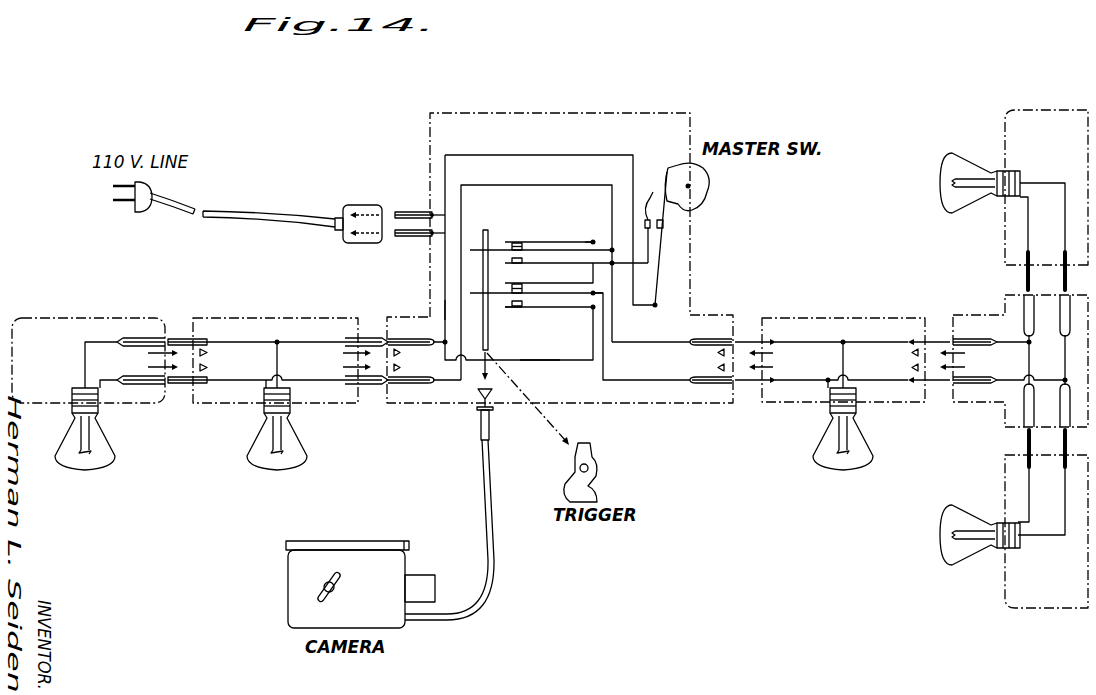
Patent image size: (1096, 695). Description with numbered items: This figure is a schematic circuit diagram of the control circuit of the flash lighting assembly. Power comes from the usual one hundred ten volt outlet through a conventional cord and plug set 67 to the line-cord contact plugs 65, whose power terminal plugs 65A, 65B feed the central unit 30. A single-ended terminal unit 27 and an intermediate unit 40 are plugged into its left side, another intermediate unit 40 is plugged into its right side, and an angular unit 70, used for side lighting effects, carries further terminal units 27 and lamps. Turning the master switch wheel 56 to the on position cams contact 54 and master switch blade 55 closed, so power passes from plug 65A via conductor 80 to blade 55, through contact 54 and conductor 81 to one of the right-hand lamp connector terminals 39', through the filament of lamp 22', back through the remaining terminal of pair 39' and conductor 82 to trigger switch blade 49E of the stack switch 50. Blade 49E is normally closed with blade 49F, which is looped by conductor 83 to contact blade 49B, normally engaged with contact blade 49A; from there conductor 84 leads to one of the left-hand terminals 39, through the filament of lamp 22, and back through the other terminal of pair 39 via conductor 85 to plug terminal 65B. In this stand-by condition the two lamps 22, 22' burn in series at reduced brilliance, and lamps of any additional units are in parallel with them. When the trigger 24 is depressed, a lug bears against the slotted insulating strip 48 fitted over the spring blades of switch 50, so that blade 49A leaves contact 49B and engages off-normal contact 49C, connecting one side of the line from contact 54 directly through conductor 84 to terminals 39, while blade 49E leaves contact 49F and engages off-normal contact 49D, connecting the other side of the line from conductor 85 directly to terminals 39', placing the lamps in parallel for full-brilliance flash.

The lamp 22 is at (296, 432).
The lamp 22' is at (868, 431).
The trigger 24 is at (597, 481).
The single-ended unit 27 is at (119, 314).
The control unit 30 is at (598, 111).
The lamp connector terminals 39 is at (424, 361).
The lamp connector terminals 39' is at (713, 332).
The intermediate unit 40 is at (296, 314).
The insulating strip 48 is at (489, 346).
The contact blade 49A is at (506, 249).
The contact blade 49B is at (532, 241).
The off-normal contact 49C is at (534, 263).
The off-normal contact 49D is at (567, 308).
The trigger switch blade 49E is at (500, 294).
The contact blade 49F is at (552, 270).
The stack switch 50 is at (536, 316).
The contact 54 is at (644, 218).
The master switch blade 55 is at (665, 226).
The master switch wheel 56 is at (709, 183).
The line-cord contact plugs 65 is at (396, 228).
The power terminal plug 65A is at (410, 210).
The power plug terminal 65B is at (412, 240).
The cord and plug set 67 is at (270, 212).
The angular unit 70 is at (974, 313).
The conductor 80 is at (541, 155).
The conductor 81 is at (654, 343).
The conductor 82 is at (681, 378).
The conductor 83 is at (594, 241).
The conductor 84 is at (540, 185).
The conductor 85 is at (444, 307).